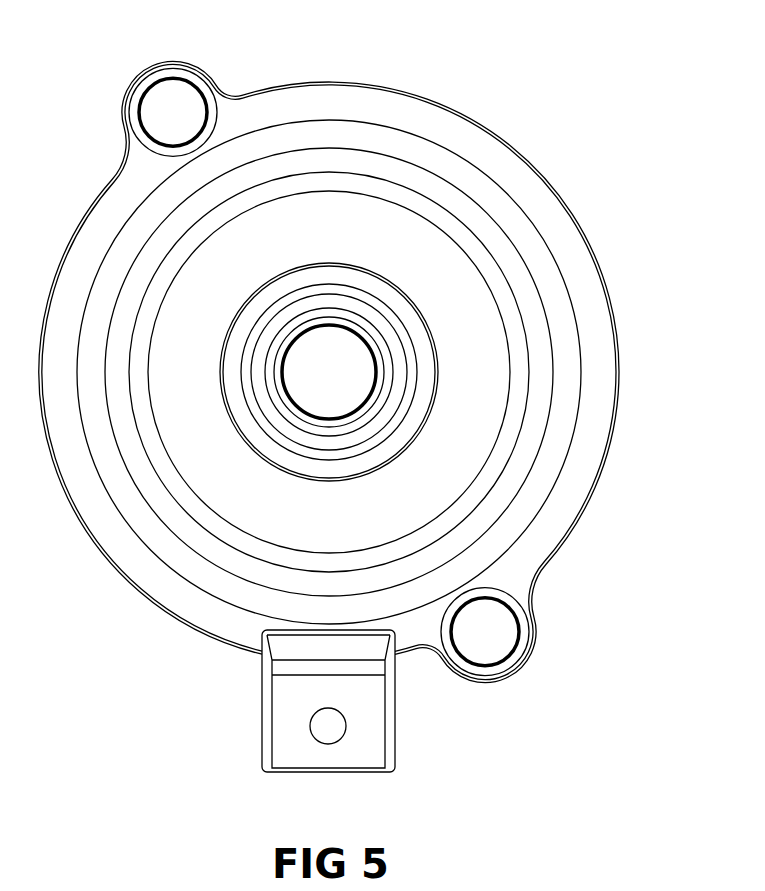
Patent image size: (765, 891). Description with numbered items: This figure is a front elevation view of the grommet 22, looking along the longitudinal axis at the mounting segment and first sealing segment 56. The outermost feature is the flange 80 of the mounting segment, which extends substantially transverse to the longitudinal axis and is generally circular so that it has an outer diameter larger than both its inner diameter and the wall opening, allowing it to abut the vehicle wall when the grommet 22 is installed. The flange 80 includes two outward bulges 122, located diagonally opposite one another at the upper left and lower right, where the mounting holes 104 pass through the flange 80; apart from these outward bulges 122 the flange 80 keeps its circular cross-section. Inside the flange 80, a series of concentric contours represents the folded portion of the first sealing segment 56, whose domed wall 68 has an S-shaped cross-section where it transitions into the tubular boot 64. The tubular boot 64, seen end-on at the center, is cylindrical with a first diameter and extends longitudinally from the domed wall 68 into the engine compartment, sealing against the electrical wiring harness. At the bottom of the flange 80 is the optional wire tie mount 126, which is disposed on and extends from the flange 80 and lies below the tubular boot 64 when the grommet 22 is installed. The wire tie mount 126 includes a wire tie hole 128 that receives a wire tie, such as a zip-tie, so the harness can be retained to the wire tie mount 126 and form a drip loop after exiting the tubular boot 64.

The grommet 22 is at (590, 105).
The first sealing segment 56 is at (528, 480).
The tubular boot 64 is at (288, 412).
The domed wall 68 is at (462, 313).
The flange 80 is at (373, 107).
The mounting holes 104 is at (172, 112).
The outward bulges 122 is at (133, 72).
The wire tie mount 126 is at (287, 722).
The wire tie hole 128 is at (328, 727).